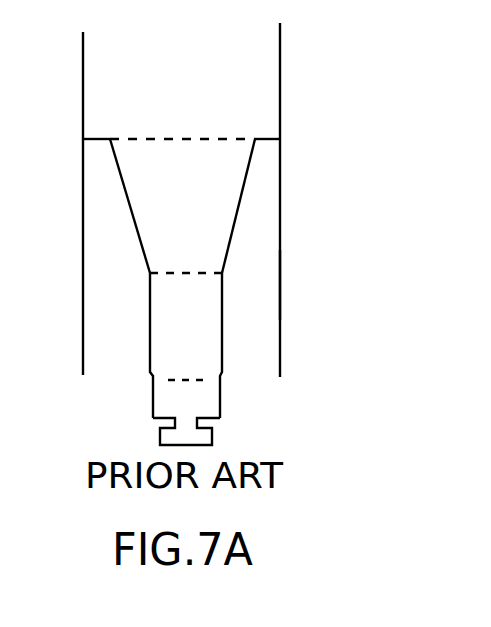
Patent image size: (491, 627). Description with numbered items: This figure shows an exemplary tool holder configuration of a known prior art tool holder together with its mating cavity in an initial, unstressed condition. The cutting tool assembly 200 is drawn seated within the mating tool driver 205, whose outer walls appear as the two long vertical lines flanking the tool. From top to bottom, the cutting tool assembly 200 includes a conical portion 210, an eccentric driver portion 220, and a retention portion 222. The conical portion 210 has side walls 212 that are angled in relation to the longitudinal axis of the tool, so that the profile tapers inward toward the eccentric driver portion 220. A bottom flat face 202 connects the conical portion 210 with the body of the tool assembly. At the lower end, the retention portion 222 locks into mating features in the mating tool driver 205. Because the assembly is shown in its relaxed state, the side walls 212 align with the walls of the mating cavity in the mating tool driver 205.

The cutting tool assembly 200 is at (258, 92).
The bottom flat face 202 is at (263, 142).
The mating tool driver 205 is at (267, 280).
The conical portion 210 is at (217, 225).
The side walls 212 is at (125, 213).
The eccentric driver portion 220 is at (218, 342).
The retention portion 222 is at (205, 405).